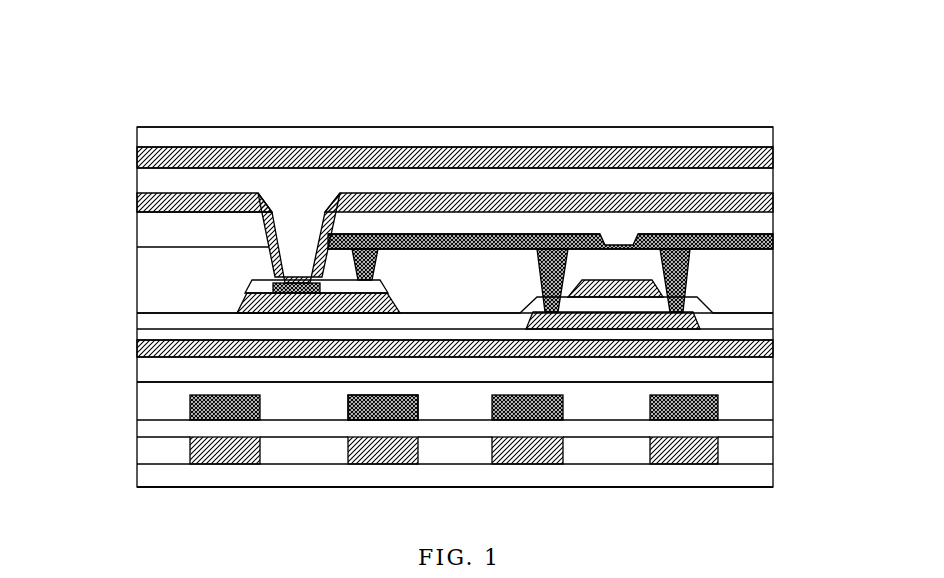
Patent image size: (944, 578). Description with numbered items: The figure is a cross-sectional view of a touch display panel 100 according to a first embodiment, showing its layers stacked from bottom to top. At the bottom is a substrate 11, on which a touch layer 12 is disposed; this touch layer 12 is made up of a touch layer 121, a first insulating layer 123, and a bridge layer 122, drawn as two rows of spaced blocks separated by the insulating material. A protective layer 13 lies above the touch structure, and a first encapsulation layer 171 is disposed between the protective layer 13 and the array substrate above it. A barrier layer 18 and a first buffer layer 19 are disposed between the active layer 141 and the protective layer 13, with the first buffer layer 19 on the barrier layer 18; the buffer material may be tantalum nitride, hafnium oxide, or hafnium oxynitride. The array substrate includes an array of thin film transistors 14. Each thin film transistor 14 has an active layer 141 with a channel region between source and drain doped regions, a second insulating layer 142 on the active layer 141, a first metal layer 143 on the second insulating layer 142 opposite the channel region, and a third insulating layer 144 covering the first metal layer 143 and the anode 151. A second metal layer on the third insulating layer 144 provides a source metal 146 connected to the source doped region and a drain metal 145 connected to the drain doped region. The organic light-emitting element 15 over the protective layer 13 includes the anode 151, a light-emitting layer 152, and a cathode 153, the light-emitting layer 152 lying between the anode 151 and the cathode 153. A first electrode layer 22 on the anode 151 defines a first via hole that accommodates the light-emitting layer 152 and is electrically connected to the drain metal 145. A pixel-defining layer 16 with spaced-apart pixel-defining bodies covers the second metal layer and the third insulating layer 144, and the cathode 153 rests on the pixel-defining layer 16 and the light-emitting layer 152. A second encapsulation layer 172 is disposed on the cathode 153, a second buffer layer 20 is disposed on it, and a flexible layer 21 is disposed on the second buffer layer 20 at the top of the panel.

The touch display panel 100 is at (200, 88).
The substrate 11 is at (723, 477).
The touch layer 12 is at (137, 395).
The touch layer 121 is at (222, 453).
The bridge layer 122 is at (380, 415).
The first insulating layer 123 is at (155, 453).
The protective layer 13 is at (723, 408).
The first encapsulation layer 171 is at (730, 377).
The barrier layer 18 is at (730, 350).
The first buffer layer 19 is at (730, 335).
The thin film transistor 14 is at (843, 217).
The active layer 141 is at (670, 320).
The second insulating layer 142 is at (747, 317).
The first metal layer 143 is at (627, 289).
The third insulating layer 144 is at (743, 267).
The drain metal 145 is at (577, 240).
The source metal 146 is at (743, 242).
The organic light-emitting element 15 is at (73, 257).
The anode 151 is at (257, 305).
The light-emitting layer 152 is at (270, 287).
The cathode 153 is at (268, 265).
The first electrode layer 22 is at (380, 287).
The second encapsulation layer 172 is at (737, 187).
The pixel-defining layer 16 is at (163, 230).
The second buffer layer 20 is at (733, 160).
The flexible layer 21 is at (733, 140).